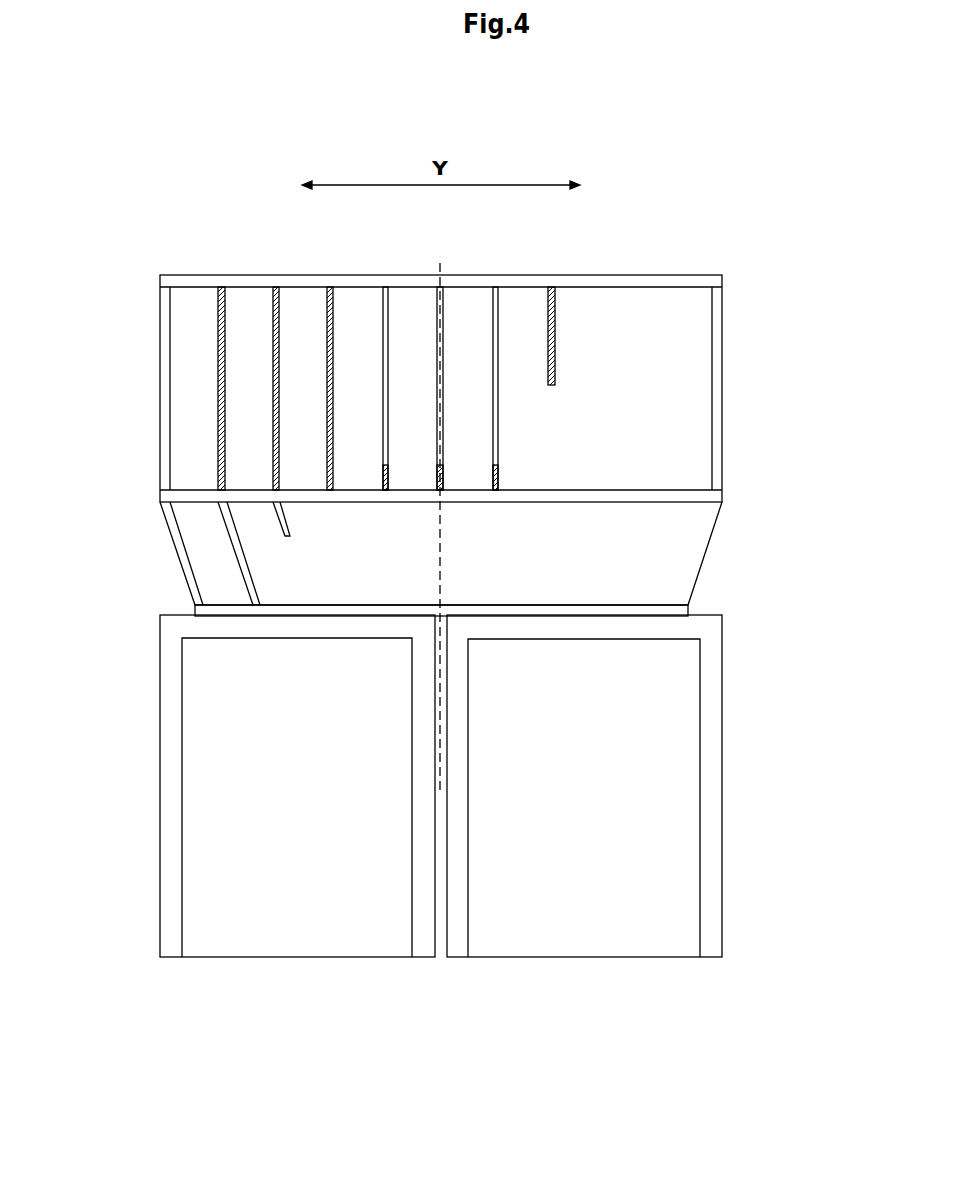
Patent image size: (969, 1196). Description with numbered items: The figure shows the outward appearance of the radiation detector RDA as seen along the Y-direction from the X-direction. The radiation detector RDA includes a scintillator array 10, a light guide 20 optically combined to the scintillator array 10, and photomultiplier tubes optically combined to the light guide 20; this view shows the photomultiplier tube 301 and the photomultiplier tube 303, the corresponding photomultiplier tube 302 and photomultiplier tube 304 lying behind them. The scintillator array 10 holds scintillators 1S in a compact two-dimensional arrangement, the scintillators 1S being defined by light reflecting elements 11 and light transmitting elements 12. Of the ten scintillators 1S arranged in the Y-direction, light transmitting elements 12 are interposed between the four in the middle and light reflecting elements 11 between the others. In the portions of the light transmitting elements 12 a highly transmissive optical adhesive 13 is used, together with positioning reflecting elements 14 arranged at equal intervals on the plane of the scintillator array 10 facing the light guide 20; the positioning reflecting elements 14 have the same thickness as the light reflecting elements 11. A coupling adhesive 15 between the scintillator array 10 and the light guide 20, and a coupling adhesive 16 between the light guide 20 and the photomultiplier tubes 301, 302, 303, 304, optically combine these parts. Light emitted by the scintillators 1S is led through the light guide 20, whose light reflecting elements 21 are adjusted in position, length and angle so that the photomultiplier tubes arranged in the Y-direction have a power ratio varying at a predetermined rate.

The radiation detector RDA is at (655, 247).
The scintillator array 10 is at (735, 407).
The scintillator 1S is at (205, 298).
The light reflecting element 11 is at (525, 605).
The light transmitting element 12 is at (483, 310).
The optical adhesive 13 is at (497, 452).
The positioning reflecting element 14 is at (497, 478).
The coupling adhesive 15 is at (780, 507).
The light guide 20 is at (722, 557).
The light reflecting element 21 is at (232, 550).
The coupling adhesive 16 is at (682, 612).
The photomultiplier tube 301 is at (300, 829).
The photomultiplier tube 302 is at (295, 933).
The photomultiplier tube 303 is at (584, 830).
The photomultiplier tube 304 is at (610, 937).